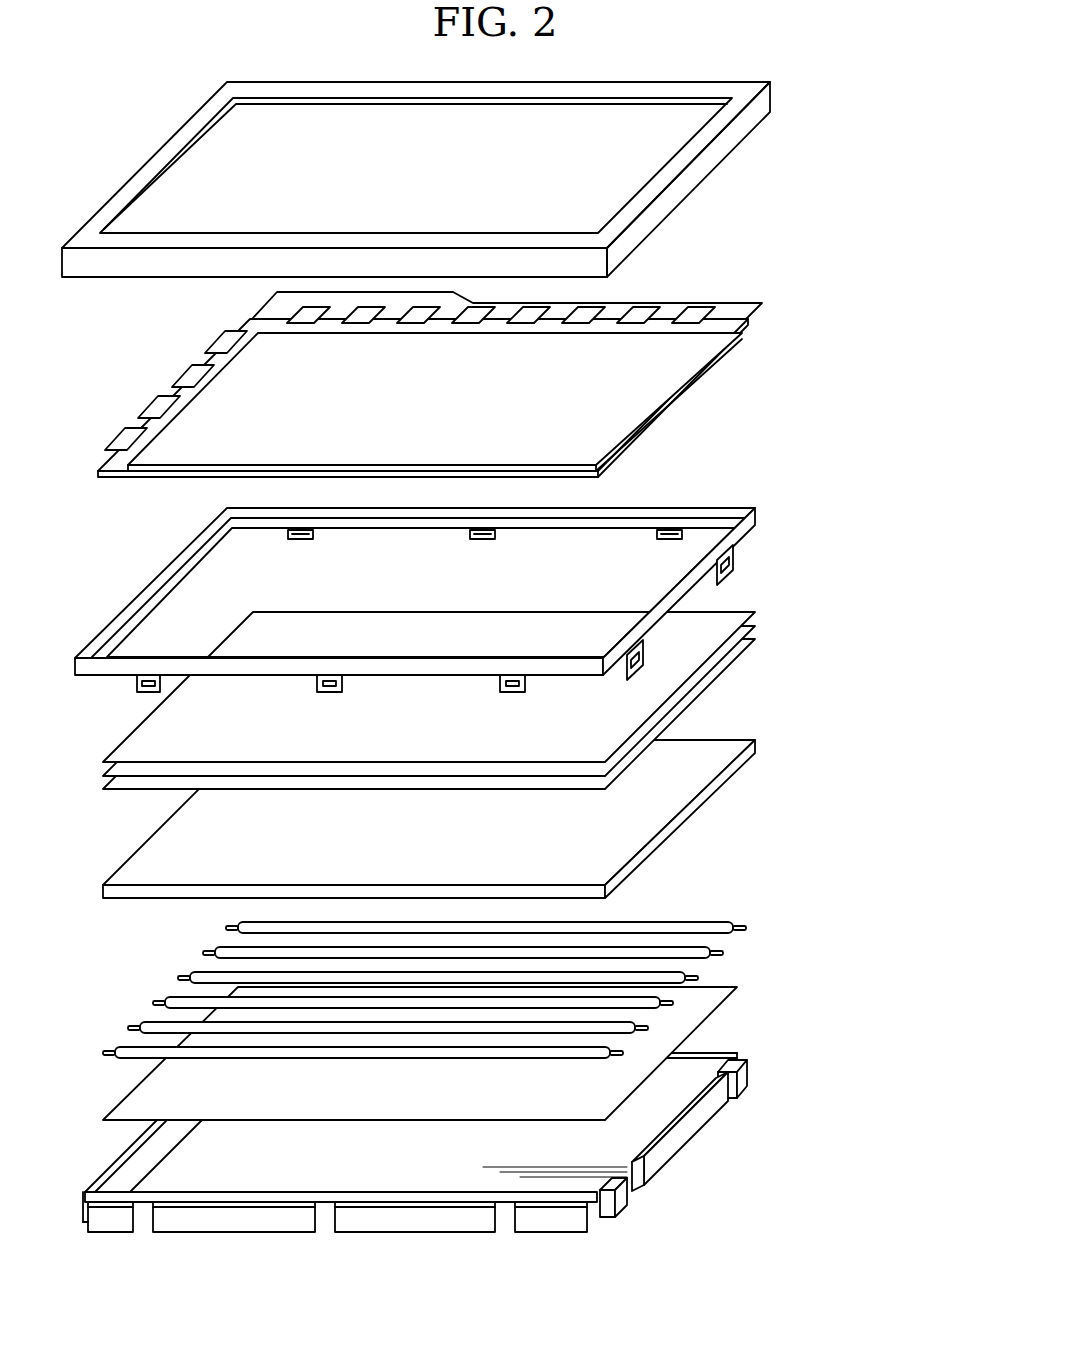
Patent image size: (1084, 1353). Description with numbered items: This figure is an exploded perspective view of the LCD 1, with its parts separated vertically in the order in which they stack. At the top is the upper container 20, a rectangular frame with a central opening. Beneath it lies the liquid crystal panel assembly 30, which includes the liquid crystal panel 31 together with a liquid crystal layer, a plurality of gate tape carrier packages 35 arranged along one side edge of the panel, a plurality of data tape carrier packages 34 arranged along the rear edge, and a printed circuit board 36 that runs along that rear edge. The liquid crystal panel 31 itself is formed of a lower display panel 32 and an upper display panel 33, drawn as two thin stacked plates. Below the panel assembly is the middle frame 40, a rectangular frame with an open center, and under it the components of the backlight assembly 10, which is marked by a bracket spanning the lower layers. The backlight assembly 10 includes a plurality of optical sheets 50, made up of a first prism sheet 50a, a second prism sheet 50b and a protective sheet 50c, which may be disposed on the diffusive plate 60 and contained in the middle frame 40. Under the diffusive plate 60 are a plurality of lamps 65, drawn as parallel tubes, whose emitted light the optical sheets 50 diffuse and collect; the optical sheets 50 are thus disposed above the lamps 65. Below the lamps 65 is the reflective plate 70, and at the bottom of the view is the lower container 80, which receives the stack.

The LCD 1 is at (391, 1303).
The backlight assembly 10 is at (848, 983).
The upper container 20 is at (760, 104).
The liquid crystal panel assembly 30 is at (479, 358).
The liquid crystal panel 31 is at (479, 398).
The lower display panel 32 is at (750, 322).
The upper display panel 33 is at (700, 349).
The data tape carrier packages 34 is at (642, 312).
The gate tape carrier packages 35 is at (193, 378).
The printed circuit board 36 is at (733, 303).
The middle frame 40 is at (757, 520).
The optical sheets 50 is at (495, 687).
The first prism sheet 50a is at (740, 648).
The second prism sheet 50b is at (747, 628).
The protective sheet 50c is at (733, 616).
The diffusive plate 60 is at (757, 746).
The lamps 65 is at (710, 923).
The reflective plate 70 is at (732, 989).
The lower container 80 is at (758, 1112).